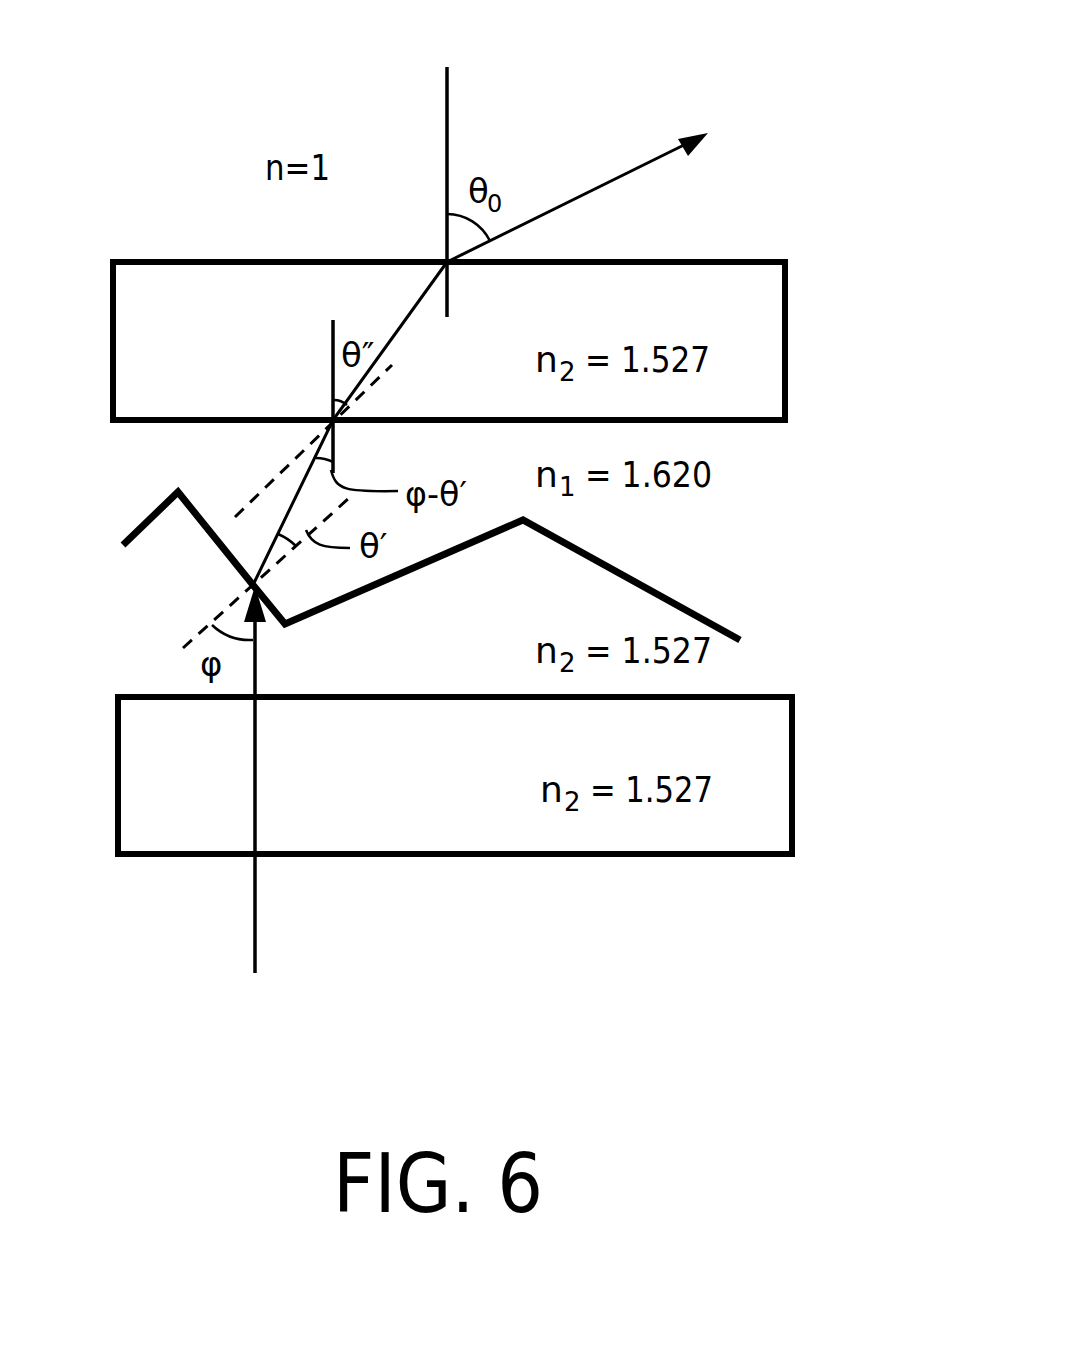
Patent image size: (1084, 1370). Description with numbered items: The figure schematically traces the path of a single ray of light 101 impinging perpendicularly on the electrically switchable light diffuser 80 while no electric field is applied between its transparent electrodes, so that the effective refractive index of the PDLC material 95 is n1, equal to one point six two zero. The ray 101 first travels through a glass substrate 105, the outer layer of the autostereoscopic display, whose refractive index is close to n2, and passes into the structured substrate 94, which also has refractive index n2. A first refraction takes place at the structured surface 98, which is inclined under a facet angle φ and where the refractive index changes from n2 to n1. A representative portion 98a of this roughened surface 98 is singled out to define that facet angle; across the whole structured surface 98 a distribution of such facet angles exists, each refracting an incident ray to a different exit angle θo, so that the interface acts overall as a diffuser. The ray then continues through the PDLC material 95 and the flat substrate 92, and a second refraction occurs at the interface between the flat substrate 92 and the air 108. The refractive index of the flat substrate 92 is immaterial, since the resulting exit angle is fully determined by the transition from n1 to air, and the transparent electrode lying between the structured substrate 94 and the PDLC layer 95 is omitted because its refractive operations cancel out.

The electrically switchable light diffuser 80 is at (575, 933).
The flat substrate 92 is at (786, 345).
The structured substrate 94 is at (745, 665).
The PDLC material 95 is at (743, 517).
The structured surface 98 is at (670, 598).
The representative portion of the roughened surface 98a is at (203, 528).
The ray of light 101 is at (260, 937).
The glass substrate 105 is at (793, 780).
The air 108 is at (703, 102).